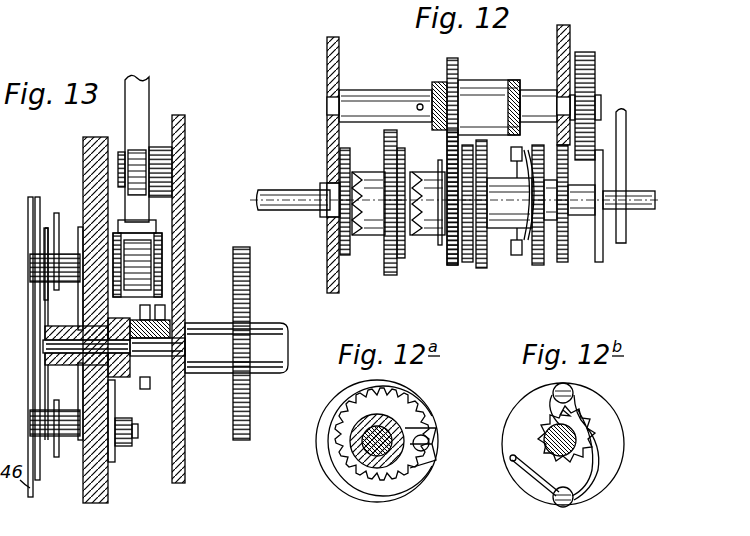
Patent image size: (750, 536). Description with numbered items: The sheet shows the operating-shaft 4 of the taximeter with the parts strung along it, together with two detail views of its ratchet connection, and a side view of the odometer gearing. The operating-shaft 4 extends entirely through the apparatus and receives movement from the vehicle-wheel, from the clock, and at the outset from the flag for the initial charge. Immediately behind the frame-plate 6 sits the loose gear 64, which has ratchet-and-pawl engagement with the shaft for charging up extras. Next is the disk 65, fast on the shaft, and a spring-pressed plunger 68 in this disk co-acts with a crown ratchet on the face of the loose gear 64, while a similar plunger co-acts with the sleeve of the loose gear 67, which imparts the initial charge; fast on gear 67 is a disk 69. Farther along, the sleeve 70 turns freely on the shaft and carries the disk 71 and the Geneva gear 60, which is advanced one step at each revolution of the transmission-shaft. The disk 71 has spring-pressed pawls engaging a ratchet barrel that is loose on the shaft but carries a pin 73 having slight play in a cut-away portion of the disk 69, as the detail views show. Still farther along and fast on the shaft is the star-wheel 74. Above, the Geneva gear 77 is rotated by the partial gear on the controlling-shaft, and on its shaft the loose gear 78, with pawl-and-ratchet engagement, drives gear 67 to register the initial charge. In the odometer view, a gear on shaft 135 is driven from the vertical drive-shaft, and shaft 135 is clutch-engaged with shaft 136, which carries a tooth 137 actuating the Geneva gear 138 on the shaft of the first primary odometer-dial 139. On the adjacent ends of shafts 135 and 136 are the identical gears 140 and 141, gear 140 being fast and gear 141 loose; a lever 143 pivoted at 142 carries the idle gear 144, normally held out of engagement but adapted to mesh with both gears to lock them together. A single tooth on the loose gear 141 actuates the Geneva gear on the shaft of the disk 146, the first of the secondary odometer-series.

In FIG. 12, the operating-shaft 4 is at (455, 193).
In FIG. 13, the frame-plate 6 is at (83, 156).
In FIG. 12, the frame-plate 6 is at (327, 60).
In FIG. 12, the Geneva gear 60 is at (564, 264).
In FIG. 12, the loose gear 64 is at (348, 162).
In FIG. 12, the disk 65 is at (390, 270).
In FIG. 12, the loose gear 67 is at (451, 268).
In FIG. 12A, the loose gear 67 is at (328, 418).
In FIG. 12, the spring-pressed plunger 68 is at (370, 236).
In FIG. 12, the disk 69 is at (498, 225).
In FIG. 12A, the disk 69 is at (424, 418).
In FIG. 12, the sleeve 70 is at (546, 236).
In FIG. 12, the disk 71 is at (540, 238).
In FIG. 12, the pin 73 is at (440, 214).
In FIG. 12A, the pin 73 is at (430, 443).
In FIG. 12, the star-wheel 74 is at (600, 262).
In FIG. 12, the Geneva gear 77 is at (587, 73).
In FIG. 12, the loose gear 78 is at (458, 66).
In FIG. 13, the shaft 135 is at (211, 326).
In FIG. 13, the shaft 136 is at (87, 396).
In FIG. 13, the tooth 137 is at (87, 284).
In FIG. 13, the Geneva gear 138 is at (46, 226).
In FIG. 13, the primary odometer-dial 139 is at (30, 198).
In FIG. 13, the gear 140 is at (150, 388).
In FIG. 13, the loose gear 141 is at (118, 388).
In FIG. 13, the pivot 142 is at (120, 152).
In FIG. 13, the lever 143 is at (141, 92).
In FIG. 13, the idle gear 144 is at (160, 245).
In FIG. 13, the disk 146 is at (111, 464).